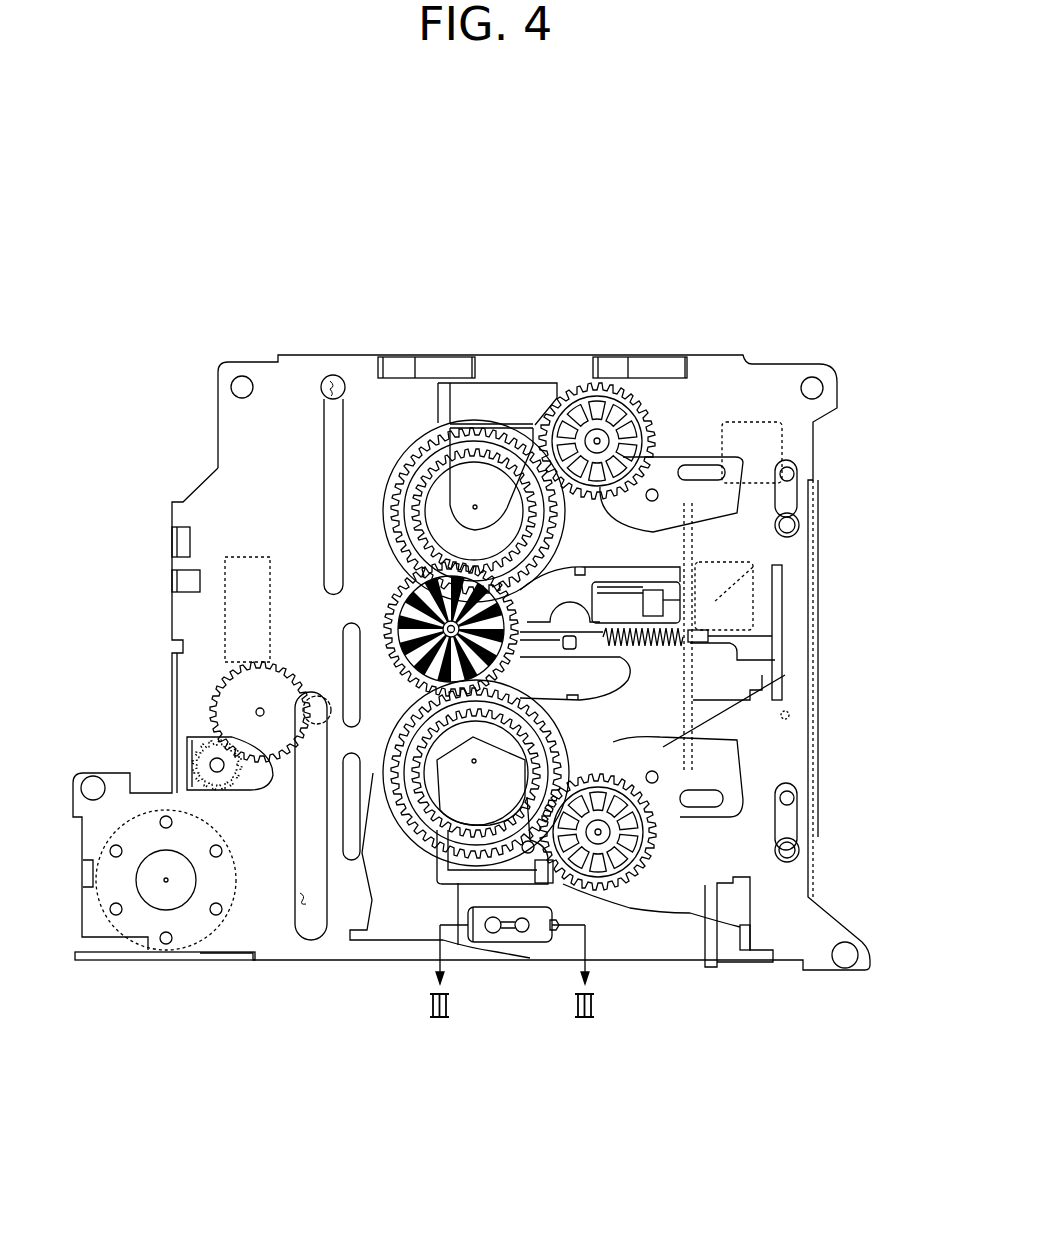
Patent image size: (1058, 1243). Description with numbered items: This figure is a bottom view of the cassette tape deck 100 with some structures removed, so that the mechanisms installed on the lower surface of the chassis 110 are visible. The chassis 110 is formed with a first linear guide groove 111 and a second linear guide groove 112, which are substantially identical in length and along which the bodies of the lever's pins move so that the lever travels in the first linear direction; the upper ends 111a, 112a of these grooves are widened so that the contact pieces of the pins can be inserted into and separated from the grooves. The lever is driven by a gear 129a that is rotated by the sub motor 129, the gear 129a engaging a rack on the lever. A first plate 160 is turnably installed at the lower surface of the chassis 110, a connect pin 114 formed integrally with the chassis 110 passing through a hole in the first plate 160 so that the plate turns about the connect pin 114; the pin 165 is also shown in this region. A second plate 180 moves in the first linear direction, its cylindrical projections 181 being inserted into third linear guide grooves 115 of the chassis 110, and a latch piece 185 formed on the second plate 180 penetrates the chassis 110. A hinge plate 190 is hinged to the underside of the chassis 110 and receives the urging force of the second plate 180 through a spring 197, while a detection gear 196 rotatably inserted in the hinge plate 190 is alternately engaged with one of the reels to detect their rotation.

The deck 100 is at (501, 188).
The chassis 110 is at (262, 445).
The first linear guide groove 111 is at (302, 897).
The upper end of first linear guide groove 111a is at (330, 700).
The second linear guide groove 112 is at (328, 455).
The upper end of second linear guide groove 112a is at (331, 376).
The connect pin 114 is at (527, 935).
The third linear guide groove 115 is at (792, 470).
The sub motor 129 is at (227, 648).
The gear 129a is at (232, 702).
The first plate 160 is at (410, 910).
The pin 165 is at (490, 938).
The second plate 180 is at (783, 553).
The cylindrical projection 181 is at (797, 515).
The latch piece 185 is at (667, 600).
The hinge plate 190 is at (607, 688).
The detection gear 196 is at (397, 593).
The spring 197 is at (690, 612).